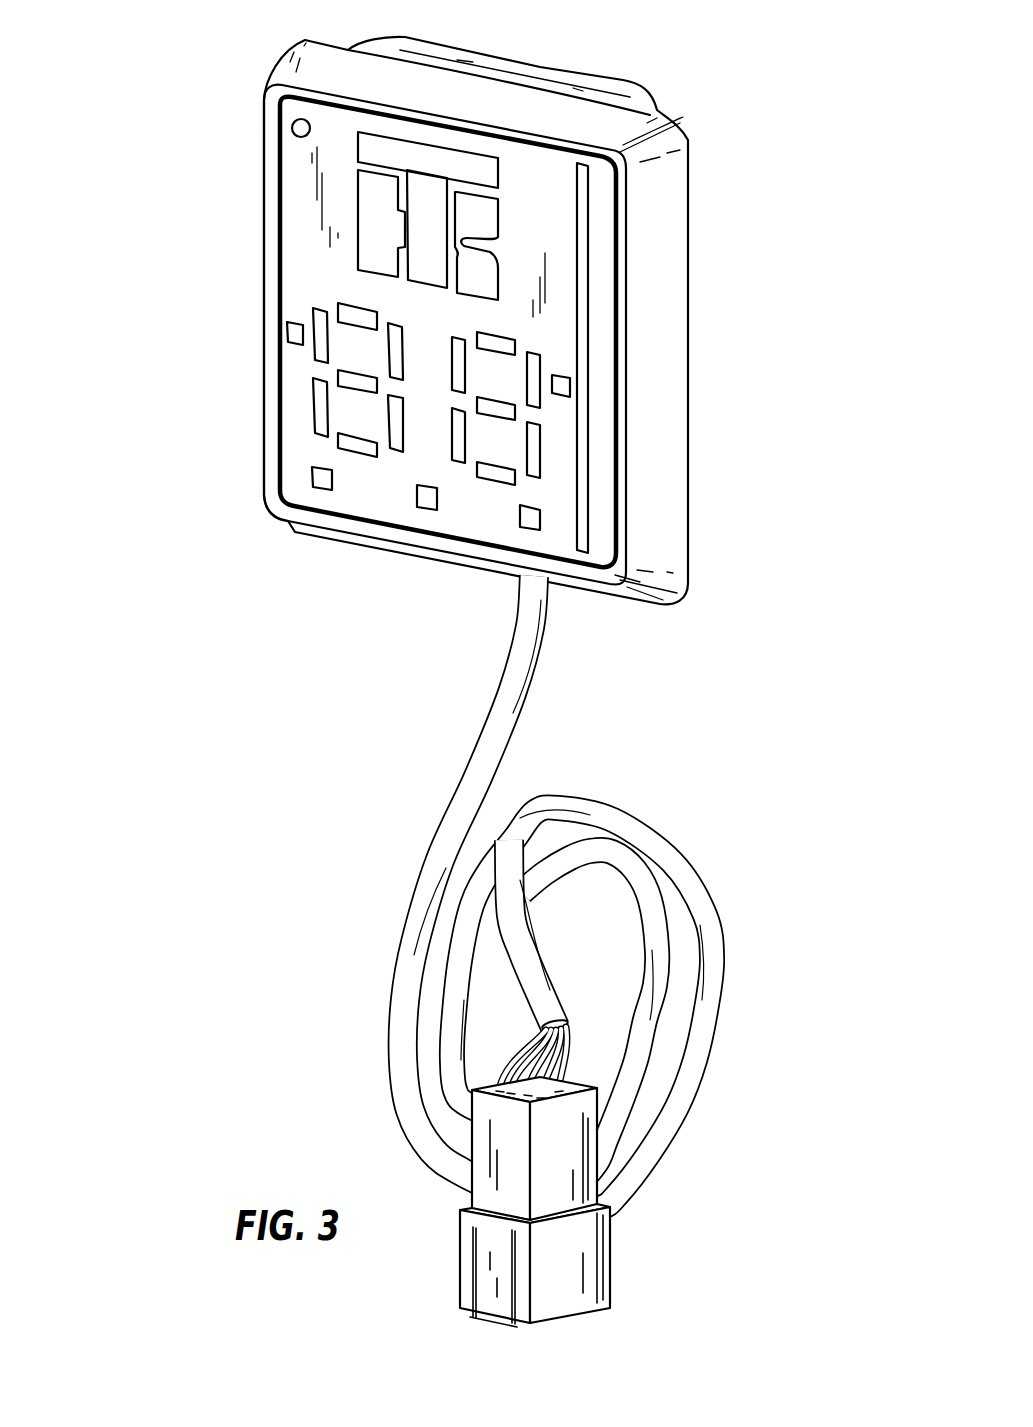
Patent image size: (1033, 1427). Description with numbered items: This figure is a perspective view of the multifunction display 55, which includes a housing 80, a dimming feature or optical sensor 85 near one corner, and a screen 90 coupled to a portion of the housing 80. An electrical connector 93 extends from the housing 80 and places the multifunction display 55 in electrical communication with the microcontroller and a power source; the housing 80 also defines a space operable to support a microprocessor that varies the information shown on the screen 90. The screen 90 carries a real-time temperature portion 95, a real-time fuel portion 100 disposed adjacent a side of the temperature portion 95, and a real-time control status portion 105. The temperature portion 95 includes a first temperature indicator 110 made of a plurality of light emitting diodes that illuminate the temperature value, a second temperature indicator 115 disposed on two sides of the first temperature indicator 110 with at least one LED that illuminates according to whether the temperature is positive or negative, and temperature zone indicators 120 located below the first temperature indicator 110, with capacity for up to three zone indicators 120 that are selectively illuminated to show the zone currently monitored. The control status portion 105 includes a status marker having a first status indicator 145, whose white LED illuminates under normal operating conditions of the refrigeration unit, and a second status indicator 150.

The multifunction display 55 is at (192, 48).
The housing 80 is at (655, 294).
The optical sensor 85 is at (298, 135).
The screen 90 is at (293, 229).
The electrical connector 93 is at (492, 757).
The real-time temperature portion 95 is at (322, 403).
The real-time fuel portion 100 is at (586, 443).
The real-time control status portion 105 is at (441, 179).
The first temperature indicator 110 is at (393, 422).
The second temperature indicator 115 is at (292, 333).
The temperature zone indicator 120 is at (313, 478).
The first status indicator 145 is at (427, 227).
The second status indicator 150 is at (481, 272).